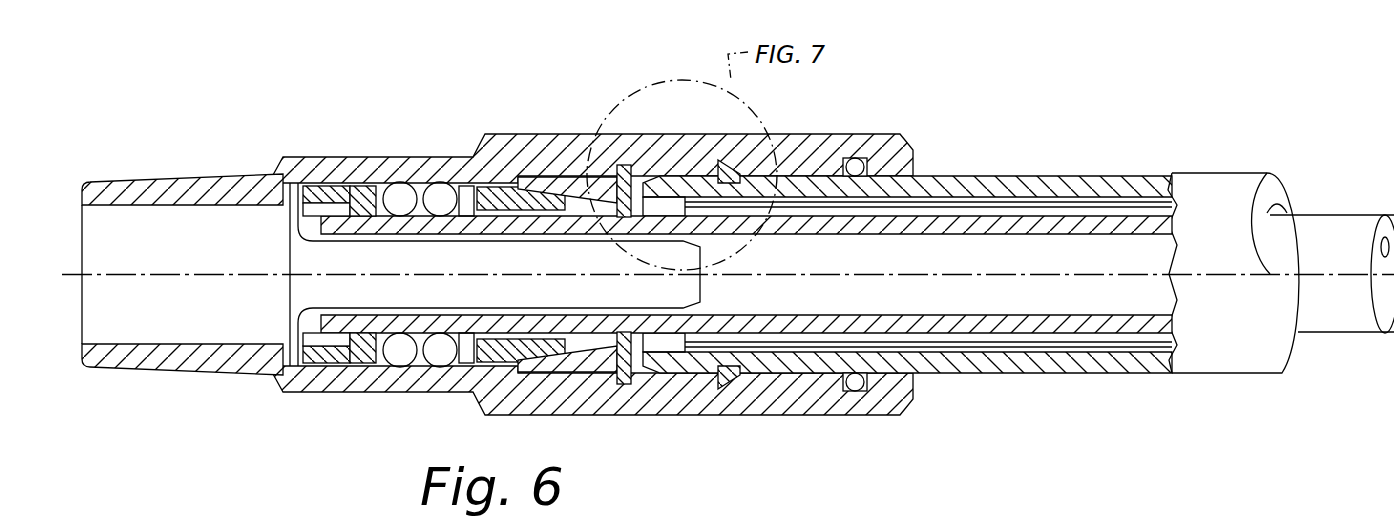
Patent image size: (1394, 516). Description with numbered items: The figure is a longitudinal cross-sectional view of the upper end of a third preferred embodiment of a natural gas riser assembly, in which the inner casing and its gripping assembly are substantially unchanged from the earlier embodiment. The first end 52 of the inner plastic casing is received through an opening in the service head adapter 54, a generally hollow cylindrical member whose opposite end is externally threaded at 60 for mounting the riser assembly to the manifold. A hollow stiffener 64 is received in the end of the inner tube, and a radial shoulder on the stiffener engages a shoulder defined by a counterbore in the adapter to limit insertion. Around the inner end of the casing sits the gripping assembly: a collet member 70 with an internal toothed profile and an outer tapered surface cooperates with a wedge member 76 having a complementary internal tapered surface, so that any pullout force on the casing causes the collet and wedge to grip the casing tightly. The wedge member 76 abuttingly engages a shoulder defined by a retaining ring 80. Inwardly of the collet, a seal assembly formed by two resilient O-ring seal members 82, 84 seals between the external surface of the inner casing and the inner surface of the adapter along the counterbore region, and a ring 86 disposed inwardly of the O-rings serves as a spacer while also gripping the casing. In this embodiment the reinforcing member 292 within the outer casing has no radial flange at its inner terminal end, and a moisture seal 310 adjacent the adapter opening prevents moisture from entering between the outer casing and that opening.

The first end 52 is at (327, 218).
The adapter 54 is at (305, 394).
The external threads 60 is at (168, 181).
The hollow stiffener 64 is at (290, 262).
The collet member 70 is at (460, 188).
The wedge member 76 is at (550, 183).
The retaining ring 80 is at (633, 415).
The seal member 82 is at (437, 189).
The seal member 84 is at (401, 195).
The ring 86 is at (336, 190).
The reinforcing member 292 is at (1052, 196).
The moisture seal 310 is at (843, 158).